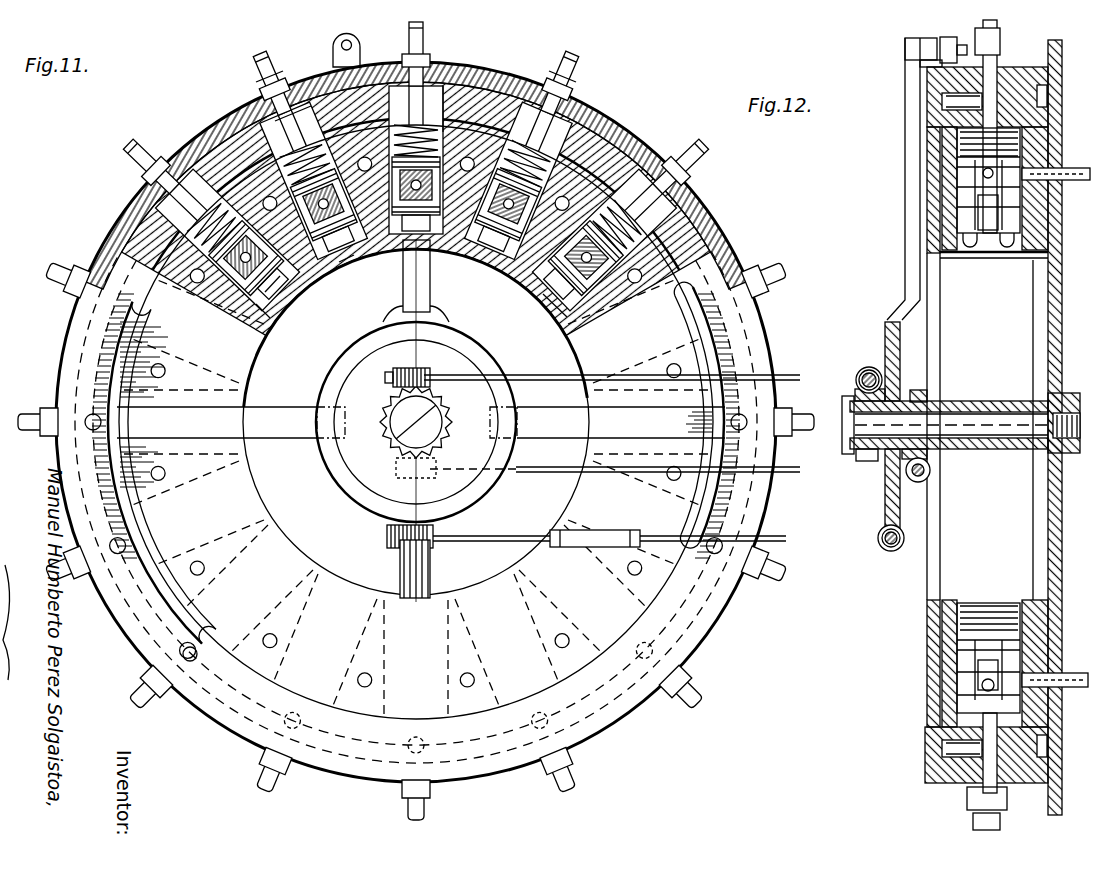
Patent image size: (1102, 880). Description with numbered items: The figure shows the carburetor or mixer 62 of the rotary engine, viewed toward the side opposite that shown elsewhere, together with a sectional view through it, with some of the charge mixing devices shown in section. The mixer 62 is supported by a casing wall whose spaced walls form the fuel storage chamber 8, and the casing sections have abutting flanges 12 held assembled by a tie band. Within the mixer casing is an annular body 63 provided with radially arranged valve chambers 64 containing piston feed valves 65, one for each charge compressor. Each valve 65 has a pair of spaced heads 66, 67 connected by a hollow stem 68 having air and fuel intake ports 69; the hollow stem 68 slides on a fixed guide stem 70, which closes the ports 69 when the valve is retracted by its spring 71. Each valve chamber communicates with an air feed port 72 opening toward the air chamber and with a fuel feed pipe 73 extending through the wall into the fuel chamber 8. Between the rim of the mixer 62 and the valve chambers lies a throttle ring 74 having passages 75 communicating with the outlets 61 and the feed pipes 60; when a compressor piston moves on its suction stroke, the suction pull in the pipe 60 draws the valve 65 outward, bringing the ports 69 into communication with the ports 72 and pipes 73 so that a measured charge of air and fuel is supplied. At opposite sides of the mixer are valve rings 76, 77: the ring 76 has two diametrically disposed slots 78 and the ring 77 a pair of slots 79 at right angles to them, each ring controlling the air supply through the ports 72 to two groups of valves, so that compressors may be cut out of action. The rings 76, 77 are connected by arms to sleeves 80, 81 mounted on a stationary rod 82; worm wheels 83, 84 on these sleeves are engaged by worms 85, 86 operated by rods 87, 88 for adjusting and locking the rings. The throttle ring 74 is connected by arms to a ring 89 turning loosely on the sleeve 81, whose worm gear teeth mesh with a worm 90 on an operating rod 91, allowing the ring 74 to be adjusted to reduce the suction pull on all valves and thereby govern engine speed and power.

In FIG. 11, the fuel storage chamber 8 is at (545, 145).
In FIG. 12, the fuel storage chamber 8 is at (1062, 80).
In FIG. 11, the abutting flange 12 is at (381, 311).
In FIG. 11, the feed pipe 60 is at (426, 128).
In FIG. 12, the feed pipe 60 is at (1000, 33).
In FIG. 11, the outlet 61 is at (596, 82).
In FIG. 12, the outlet 61 is at (965, 62).
In FIG. 11, the carburetor or mixer 62 is at (398, 208).
In FIG. 11, the annular body 63 is at (598, 218).
In FIG. 11, the valve chamber 64 is at (537, 321).
In FIG. 11, the piston feed valve 65 is at (220, 226).
In FIG. 11, the head 66 is at (259, 106).
In FIG. 11, the head 67 is at (402, 281).
In FIG. 11, the hollow stem 68 is at (279, 341).
In FIG. 12, the hollow stem 68 is at (965, 165).
In FIG. 11, the air and fuel intake port 69 is at (286, 314).
In FIG. 12, the air and fuel intake port 69 is at (986, 175).
In FIG. 11, the fixed guide stem 70 is at (345, 280).
In FIG. 12, the fixed guide stem 70 is at (985, 210).
In FIG. 11, the spring 71 is at (301, 149).
In FIG. 11, the air feed port 72 is at (416, 466).
In FIG. 12, the air feed port 72 is at (957, 100).
In FIG. 12, the fuel feed pipe 73 is at (1067, 180).
In FIG. 11, the throttle ring 74 is at (416, 422).
In FIG. 11, the passage 75 is at (465, 83).
In FIG. 11, the valve ring 76 is at (417, 435).
In FIG. 12, the valve ring 76 is at (932, 97).
In FIG. 11, the valve ring 77 is at (287, 438).
In FIG. 12, the valve ring 77 is at (1043, 125).
In FIG. 11, the slot 78 is at (144, 629).
In FIG. 11, the slot 79 is at (207, 285).
In FIG. 12, the sleeve 80 is at (966, 405).
In FIG. 12, the sleeve 81 is at (855, 452).
In FIG. 12, the stationary rod or shaft 82 is at (989, 428).
In FIG. 12, the worm wheel 83 is at (925, 395).
In FIG. 11, the worm wheel 84 is at (406, 433).
In FIG. 12, the worm wheel 84 is at (866, 462).
In FIG. 11, the worm 85 is at (429, 479).
In FIG. 12, the worm 85 is at (928, 480).
In FIG. 11, the worm 86 is at (416, 422).
In FIG. 12, the worm 86 is at (858, 372).
In FIG. 11, the rod 87 is at (616, 488).
In FIG. 11, the rod 88 is at (614, 364).
In FIG. 12, the rod 88 is at (869, 366).
In FIG. 11, the ring 89 is at (392, 368).
In FIG. 12, the ring 89 is at (888, 518).
In FIG. 11, the worm 90 is at (432, 549).
In FIG. 12, the worm 90 is at (892, 553).
In FIG. 11, the operating rod 91 is at (622, 547).